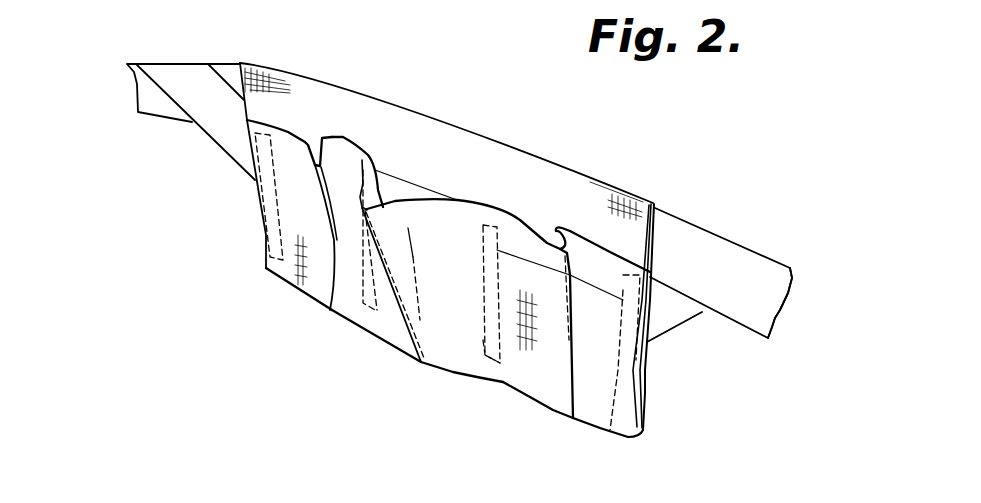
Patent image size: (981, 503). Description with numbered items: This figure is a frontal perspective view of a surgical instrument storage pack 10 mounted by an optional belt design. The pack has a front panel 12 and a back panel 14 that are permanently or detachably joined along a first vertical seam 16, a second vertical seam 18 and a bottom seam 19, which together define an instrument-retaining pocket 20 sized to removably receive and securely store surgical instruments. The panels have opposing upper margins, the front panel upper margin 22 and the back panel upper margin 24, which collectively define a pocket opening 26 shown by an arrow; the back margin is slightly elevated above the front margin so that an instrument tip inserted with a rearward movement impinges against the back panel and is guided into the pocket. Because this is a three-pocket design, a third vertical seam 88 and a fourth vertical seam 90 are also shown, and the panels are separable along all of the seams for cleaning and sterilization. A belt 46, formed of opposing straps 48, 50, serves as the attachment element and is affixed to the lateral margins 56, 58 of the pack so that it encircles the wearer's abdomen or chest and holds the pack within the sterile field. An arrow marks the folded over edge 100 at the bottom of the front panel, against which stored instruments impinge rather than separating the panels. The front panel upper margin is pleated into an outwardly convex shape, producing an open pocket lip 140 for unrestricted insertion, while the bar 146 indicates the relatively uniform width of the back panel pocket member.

The instrument storage pack 10 is at (260, 345).
The front panel 12 is at (433, 220).
The back panel 14 is at (446, 140).
The first vertical seam 16 is at (262, 212).
The second vertical seam 18 is at (363, 310).
The bottom seam 19 is at (297, 292).
The instrument-retaining pocket 20 is at (292, 131).
The front panel upper margin 22 is at (369, 155).
The back panel upper margin 24 is at (380, 95).
The pocket opening 26 is at (314, 153).
The belt 46 is at (700, 250).
The bar 48 is at (137, 95).
The bar end 50 is at (785, 314).
The lateral margin 56 is at (656, 205).
The lateral margin 58 is at (238, 63).
The third vertical seam 88 is at (483, 353).
The fourth vertical seam 90 is at (620, 420).
The folded over edge 100 is at (510, 392).
The open pocket lip 140 is at (383, 208).
The back panel pocket member width 146 is at (520, 250).